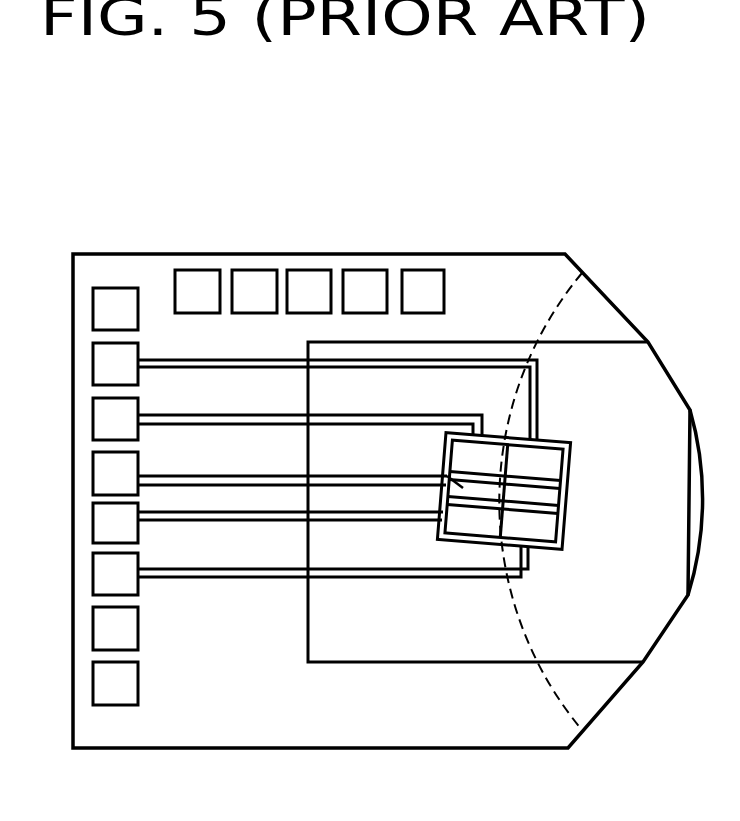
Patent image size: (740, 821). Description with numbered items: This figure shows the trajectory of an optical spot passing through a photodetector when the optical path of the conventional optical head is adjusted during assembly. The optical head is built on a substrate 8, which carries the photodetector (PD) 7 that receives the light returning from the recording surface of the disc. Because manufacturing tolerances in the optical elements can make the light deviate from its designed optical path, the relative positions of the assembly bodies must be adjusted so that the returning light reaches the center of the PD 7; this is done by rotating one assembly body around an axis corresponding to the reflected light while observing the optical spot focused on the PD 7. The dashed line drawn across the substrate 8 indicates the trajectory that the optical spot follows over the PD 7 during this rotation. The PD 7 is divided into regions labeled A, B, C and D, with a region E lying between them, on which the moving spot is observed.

The photodetector 7 is at (497, 453).
The substrate 8 is at (494, 300).
The region A is at (466, 456).
The region B is at (548, 463).
The region C is at (458, 523).
The region D is at (541, 526).
The region E is at (447, 474).